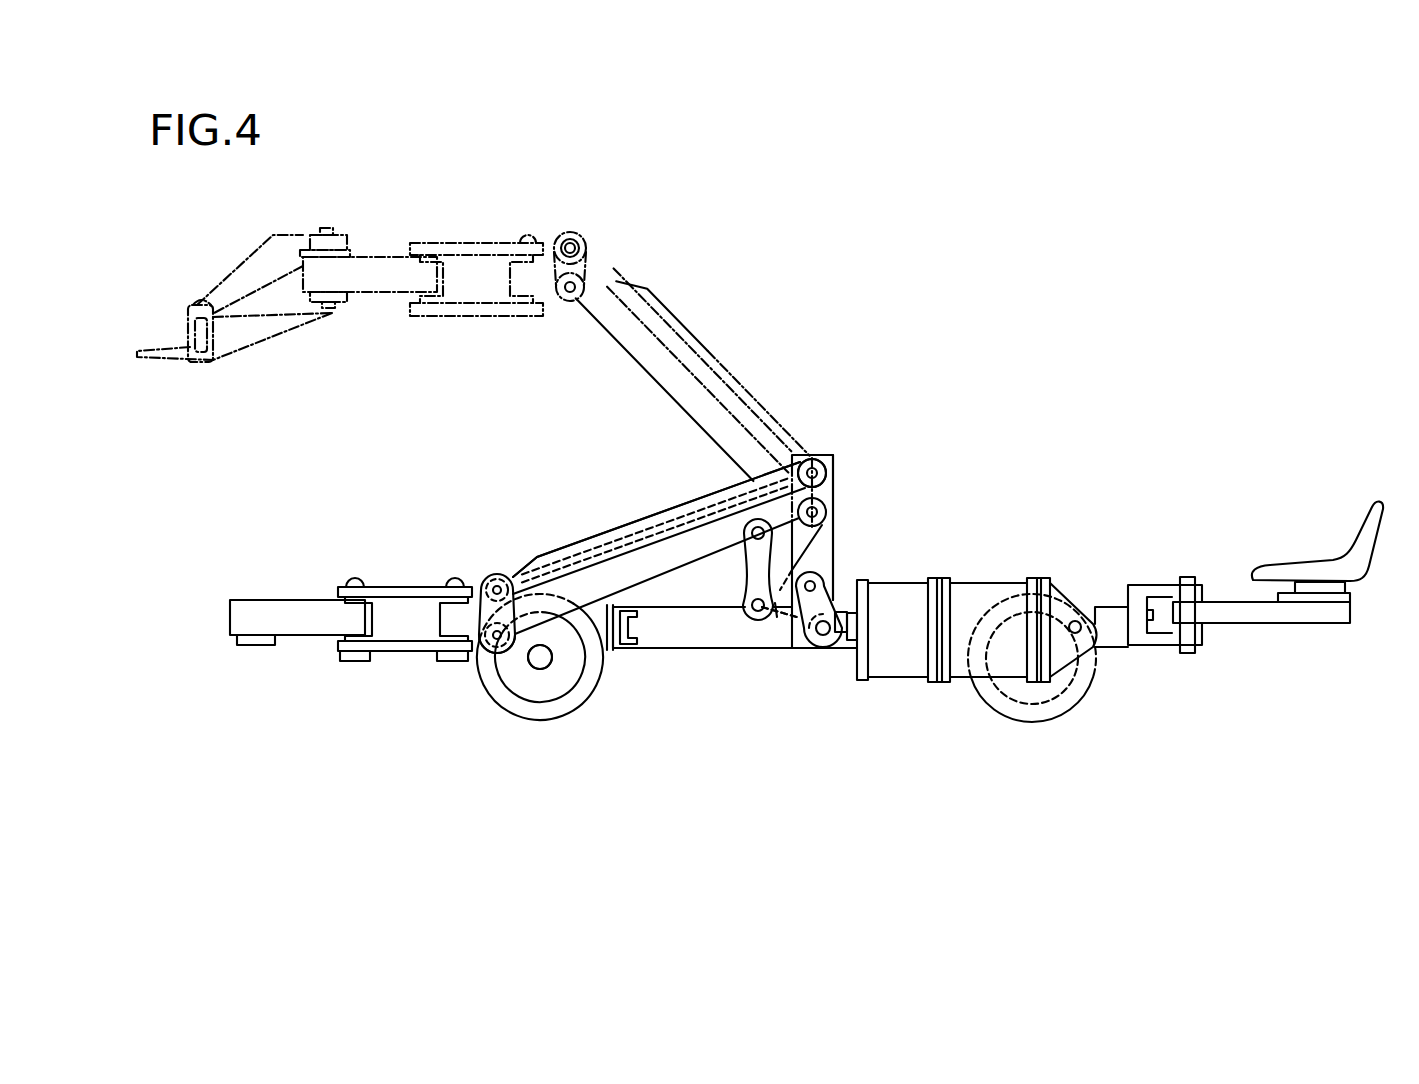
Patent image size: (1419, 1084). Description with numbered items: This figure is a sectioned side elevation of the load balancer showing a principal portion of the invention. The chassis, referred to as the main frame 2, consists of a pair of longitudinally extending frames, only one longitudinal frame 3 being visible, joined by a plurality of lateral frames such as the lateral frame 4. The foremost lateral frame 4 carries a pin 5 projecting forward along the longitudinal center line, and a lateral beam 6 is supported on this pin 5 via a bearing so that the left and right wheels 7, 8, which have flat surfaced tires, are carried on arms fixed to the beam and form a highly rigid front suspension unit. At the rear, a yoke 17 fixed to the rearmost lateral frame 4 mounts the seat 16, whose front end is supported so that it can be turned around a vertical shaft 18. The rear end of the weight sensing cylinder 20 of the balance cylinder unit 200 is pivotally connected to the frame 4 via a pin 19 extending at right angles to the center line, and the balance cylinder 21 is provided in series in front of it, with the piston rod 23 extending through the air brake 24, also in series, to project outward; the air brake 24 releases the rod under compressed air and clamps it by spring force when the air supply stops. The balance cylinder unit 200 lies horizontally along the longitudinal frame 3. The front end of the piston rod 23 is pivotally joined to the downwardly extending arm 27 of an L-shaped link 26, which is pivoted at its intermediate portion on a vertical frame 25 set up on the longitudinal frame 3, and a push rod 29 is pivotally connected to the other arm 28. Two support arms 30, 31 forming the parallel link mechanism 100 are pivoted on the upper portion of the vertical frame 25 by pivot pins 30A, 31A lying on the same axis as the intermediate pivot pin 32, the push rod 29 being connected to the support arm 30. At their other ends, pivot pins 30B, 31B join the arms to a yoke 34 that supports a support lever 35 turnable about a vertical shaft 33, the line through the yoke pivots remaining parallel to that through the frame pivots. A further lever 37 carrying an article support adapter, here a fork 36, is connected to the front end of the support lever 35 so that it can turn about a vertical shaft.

The main frame 2 is at (772, 660).
The longitudinal frame 3 is at (684, 640).
The lateral frame 4 is at (631, 646).
The pin 5 is at (610, 652).
The lateral beam 6 is at (597, 672).
The left wheel 7 is at (507, 716).
The right wheel 8 is at (540, 657).
The seat 16 is at (1353, 547).
The yoke 17 is at (1153, 645).
The vertical shaft 18 is at (1188, 576).
The pin 19 is at (1078, 622).
The weight sensing cylinder 20 is at (1040, 583).
The balance cylinder 21 is at (995, 585).
The piston rod 23 is at (858, 630).
The air brake 24 is at (917, 583).
The vertical frame 25 is at (830, 540).
The L-shaped link 26 is at (838, 582).
The downwardly extending arm 27 is at (827, 640).
The other arm 28 is at (778, 610).
The push rod 29 is at (742, 565).
The support arm 30 is at (828, 507).
The pivot pin 30A is at (822, 502).
The pivot pin 30B is at (487, 650).
The support arm 31 is at (822, 450).
The pivot pin 31A is at (808, 454).
The pivot pin 31B is at (512, 580).
The intermediate pivot pin 32 is at (790, 616).
The vertical shaft 33 is at (453, 588).
The yoke 34 is at (503, 587).
The support lever 35 is at (395, 588).
The fork 36 is at (273, 338).
The lever 37 is at (387, 296).
The parallel link mechanism 100 is at (660, 506).
The balance cylinder unit 200 is at (958, 684).